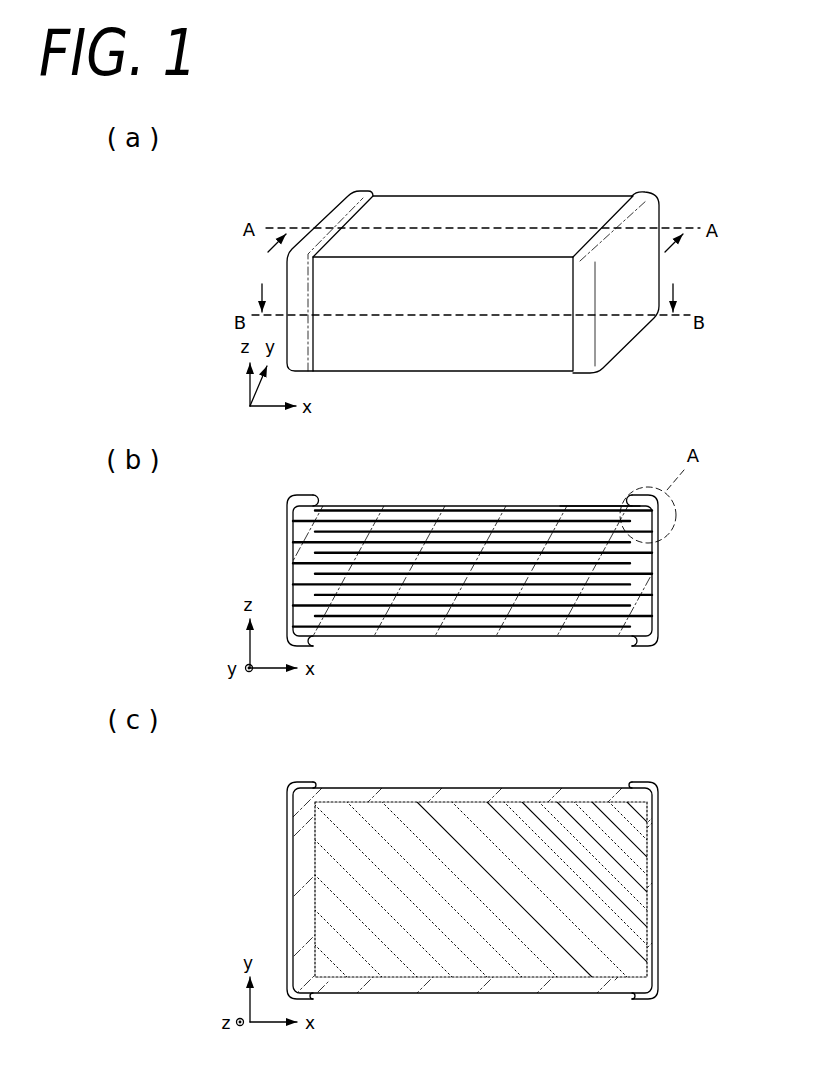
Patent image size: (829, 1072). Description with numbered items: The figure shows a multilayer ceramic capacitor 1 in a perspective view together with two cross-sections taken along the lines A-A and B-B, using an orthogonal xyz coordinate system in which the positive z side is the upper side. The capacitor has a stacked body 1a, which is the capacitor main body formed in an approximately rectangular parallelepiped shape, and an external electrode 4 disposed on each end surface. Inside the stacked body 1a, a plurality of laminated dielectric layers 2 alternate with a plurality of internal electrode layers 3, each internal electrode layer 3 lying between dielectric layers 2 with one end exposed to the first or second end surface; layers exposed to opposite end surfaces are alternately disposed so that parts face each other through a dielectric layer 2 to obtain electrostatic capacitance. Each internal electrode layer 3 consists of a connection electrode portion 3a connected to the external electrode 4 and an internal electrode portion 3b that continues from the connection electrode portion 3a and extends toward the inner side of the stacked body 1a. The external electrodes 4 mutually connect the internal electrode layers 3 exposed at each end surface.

The multilayer ceramic capacitor 1 is at (627, 192).
The stacked body 1a is at (573, 501).
The dielectric layer 2 is at (458, 210).
The internal electrode layer 3 is at (296, 527).
The connection electrode portion 3a is at (645, 893).
The internal electrode portion 3b is at (510, 887).
The external electrode 4 is at (625, 283).